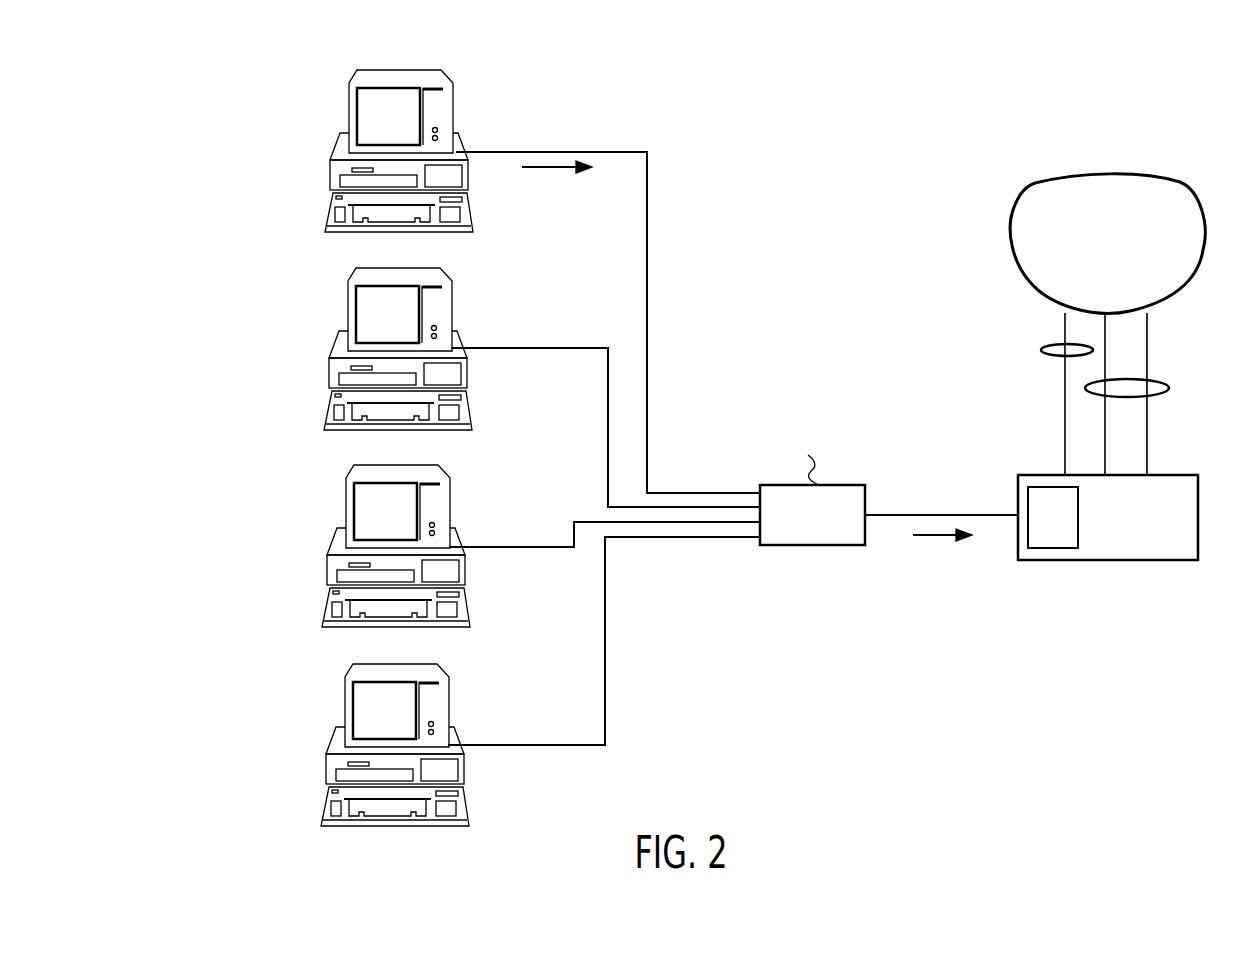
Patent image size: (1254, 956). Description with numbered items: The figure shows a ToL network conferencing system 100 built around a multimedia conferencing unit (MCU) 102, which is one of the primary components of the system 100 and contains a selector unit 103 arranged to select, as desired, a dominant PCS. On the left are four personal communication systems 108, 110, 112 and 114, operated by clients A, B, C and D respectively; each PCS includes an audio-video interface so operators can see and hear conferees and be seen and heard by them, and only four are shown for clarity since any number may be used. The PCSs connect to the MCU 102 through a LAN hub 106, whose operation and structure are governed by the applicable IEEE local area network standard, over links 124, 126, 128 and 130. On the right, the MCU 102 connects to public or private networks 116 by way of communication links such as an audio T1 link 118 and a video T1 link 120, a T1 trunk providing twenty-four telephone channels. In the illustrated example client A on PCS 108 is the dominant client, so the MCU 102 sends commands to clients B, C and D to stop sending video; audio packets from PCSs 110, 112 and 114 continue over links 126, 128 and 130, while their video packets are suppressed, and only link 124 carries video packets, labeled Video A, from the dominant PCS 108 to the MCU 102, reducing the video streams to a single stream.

The system 100 is at (268, 98).
The multimedia conferencing unit 102 is at (1150, 541).
The selector unit 103 is at (1068, 530).
The LAN hub 106 is at (827, 528).
The personal communication system 108 is at (453, 102).
The personal communication system 110 is at (347, 287).
The personal communication system 112 is at (345, 495).
The personal communication system 114 is at (344, 703).
The public or private networks 116 is at (1089, 255).
The audio T1 communication link 118 is at (1040, 347).
The video T1 communication link 120 is at (1170, 388).
The link 124 is at (647, 262).
The link 126 is at (540, 350).
The link 128 is at (535, 550).
The link 130 is at (605, 615).